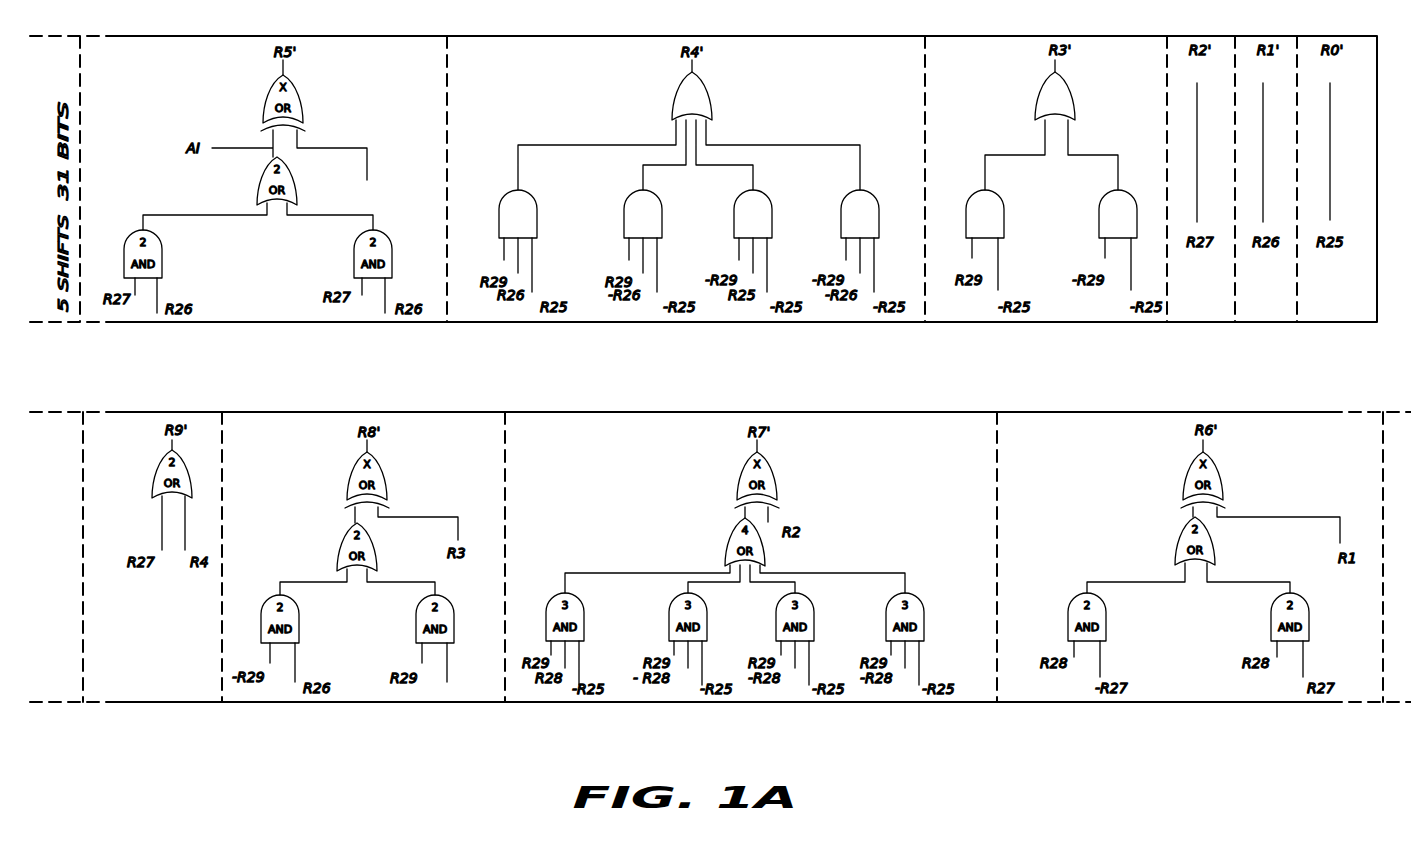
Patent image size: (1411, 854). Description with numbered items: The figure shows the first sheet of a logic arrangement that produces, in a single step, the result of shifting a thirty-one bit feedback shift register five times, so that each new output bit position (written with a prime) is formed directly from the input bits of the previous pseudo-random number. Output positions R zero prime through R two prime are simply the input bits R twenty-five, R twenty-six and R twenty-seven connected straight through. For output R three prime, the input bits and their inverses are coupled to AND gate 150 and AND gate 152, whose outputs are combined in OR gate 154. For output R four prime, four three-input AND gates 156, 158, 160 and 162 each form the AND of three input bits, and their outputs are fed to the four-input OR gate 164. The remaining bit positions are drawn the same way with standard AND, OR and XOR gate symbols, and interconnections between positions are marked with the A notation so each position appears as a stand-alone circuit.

The AND gate 150 is at (1131, 193).
The AND gate 152 is at (972, 195).
The OR gate 154 is at (1075, 92).
The AND gate 156 is at (875, 193).
The AND gate 158 is at (772, 213).
The AND gate 160 is at (662, 230).
The AND gate 162 is at (504, 195).
The four-input OR gate 164 is at (712, 103).